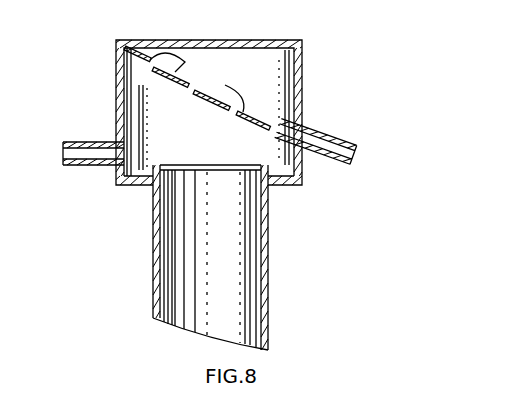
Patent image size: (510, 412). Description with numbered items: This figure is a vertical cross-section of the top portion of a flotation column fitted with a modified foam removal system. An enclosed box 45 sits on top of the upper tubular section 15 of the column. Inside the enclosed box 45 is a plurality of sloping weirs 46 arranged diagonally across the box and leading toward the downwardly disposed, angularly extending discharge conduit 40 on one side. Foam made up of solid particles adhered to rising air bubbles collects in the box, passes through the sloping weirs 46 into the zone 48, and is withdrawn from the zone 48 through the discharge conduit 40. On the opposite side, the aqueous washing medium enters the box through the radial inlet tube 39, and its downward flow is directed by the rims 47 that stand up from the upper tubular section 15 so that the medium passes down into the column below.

The upper tubular section 15 is at (268, 252).
The feed tube 39 is at (103, 142).
The discharge conduit 40 is at (327, 131).
The enclosed box 45 is at (302, 63).
The sloping weirs 46 is at (199, 91).
The rims 47 is at (153, 163).
The zone 48 is at (274, 80).